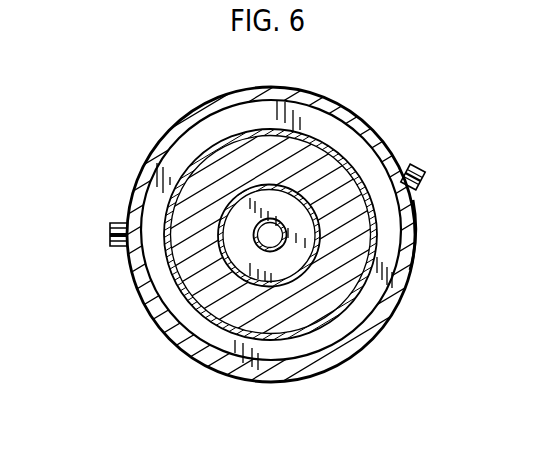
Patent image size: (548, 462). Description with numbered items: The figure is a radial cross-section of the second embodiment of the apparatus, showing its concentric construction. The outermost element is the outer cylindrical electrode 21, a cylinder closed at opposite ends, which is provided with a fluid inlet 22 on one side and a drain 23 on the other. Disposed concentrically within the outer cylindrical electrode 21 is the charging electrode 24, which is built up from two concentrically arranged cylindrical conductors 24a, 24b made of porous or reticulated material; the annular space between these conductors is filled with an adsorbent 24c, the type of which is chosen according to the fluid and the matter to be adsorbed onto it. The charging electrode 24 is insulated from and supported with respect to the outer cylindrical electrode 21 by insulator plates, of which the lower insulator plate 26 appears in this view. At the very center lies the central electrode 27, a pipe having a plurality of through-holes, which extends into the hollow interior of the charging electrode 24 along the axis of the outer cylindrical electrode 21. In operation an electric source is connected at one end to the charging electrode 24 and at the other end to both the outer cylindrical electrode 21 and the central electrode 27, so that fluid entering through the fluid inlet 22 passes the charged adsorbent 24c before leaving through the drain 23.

The outer cylindrical electrode 21 is at (325, 94).
The fluid inlet 22 is at (110, 236).
The drain 23 is at (409, 163).
The charging electrode 24 is at (237, 231).
The cylindrical conductor 24a is at (181, 290).
The cylindrical conductor 24b is at (248, 307).
The adsorbent 24c is at (239, 262).
The lower insulator plate 26 is at (395, 246).
The central electrode 27 is at (256, 226).